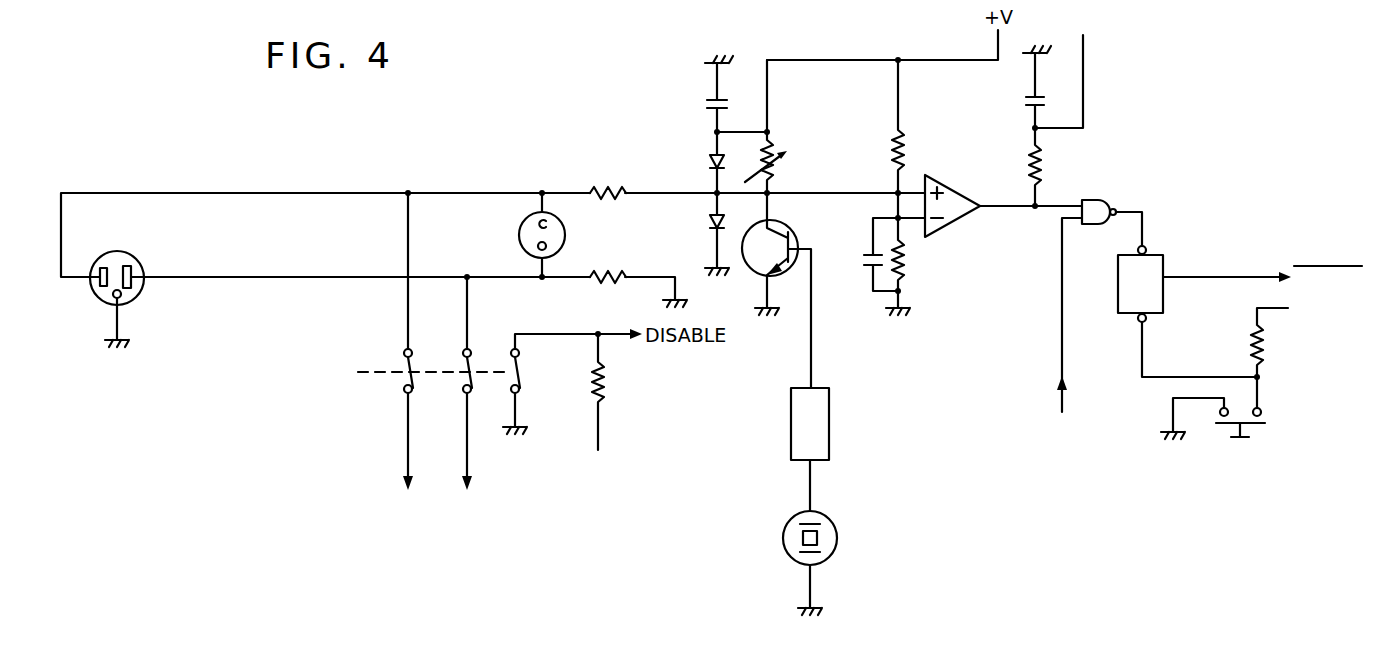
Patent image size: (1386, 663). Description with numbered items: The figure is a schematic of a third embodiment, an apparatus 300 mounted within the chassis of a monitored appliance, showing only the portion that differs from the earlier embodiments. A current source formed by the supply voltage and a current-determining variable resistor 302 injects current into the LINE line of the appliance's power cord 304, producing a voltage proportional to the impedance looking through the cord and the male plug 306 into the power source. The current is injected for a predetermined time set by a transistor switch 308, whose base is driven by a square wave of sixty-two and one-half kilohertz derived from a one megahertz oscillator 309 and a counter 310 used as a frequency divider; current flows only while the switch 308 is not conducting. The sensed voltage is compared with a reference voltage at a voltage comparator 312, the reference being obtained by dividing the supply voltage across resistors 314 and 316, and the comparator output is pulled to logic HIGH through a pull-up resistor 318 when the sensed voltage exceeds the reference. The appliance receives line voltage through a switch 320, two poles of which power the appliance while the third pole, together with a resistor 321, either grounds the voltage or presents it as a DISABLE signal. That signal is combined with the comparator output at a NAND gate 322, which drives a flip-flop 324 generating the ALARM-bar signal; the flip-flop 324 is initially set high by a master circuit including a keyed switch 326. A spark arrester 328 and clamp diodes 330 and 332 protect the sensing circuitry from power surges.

The apparatus 300 is at (578, 126).
The current-determining variable resistor 302 is at (772, 141).
The power cord 304 is at (275, 192).
The male plug 306 is at (122, 261).
The transistor switch 308 is at (749, 268).
The oscillator 309 is at (785, 537).
The counter 310 is at (790, 418).
The voltage comparator 312 is at (962, 226).
The resistor 314 is at (903, 142).
The resistor 316 is at (905, 250).
The pull-up resistor 318 is at (1028, 163).
The switch 320 is at (398, 355).
The resistor 321 is at (604, 384).
The NAND gate 322 is at (1112, 198).
The flip-flop 324 is at (1150, 250).
The keyed switch 326 is at (1266, 428).
The spark arrester 328 is at (566, 234).
The clamp diode 330 is at (709, 162).
The clamp diode 332 is at (708, 224).